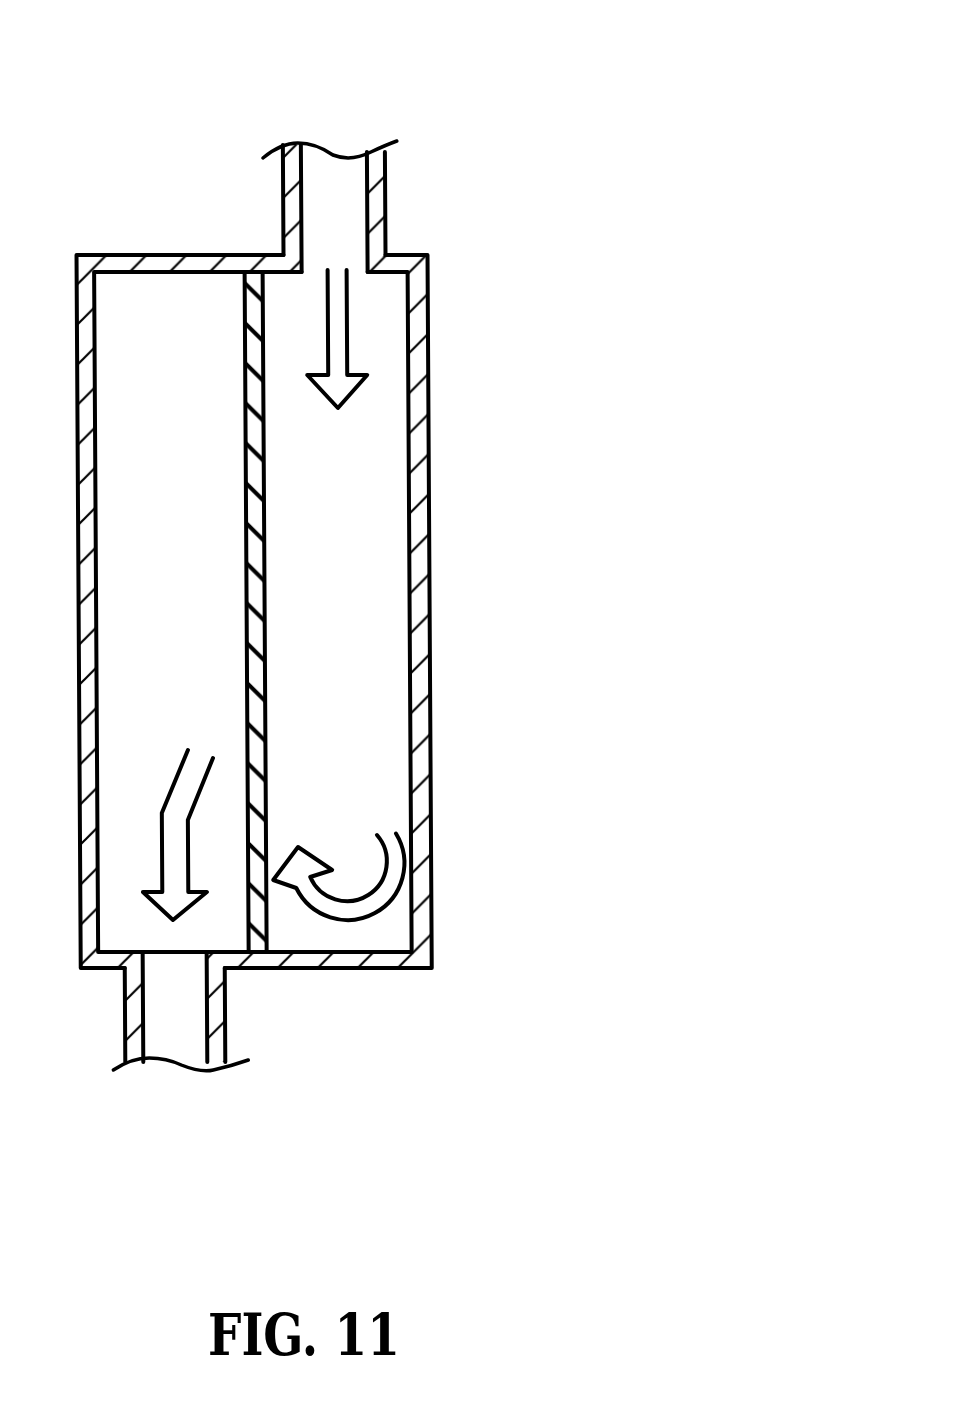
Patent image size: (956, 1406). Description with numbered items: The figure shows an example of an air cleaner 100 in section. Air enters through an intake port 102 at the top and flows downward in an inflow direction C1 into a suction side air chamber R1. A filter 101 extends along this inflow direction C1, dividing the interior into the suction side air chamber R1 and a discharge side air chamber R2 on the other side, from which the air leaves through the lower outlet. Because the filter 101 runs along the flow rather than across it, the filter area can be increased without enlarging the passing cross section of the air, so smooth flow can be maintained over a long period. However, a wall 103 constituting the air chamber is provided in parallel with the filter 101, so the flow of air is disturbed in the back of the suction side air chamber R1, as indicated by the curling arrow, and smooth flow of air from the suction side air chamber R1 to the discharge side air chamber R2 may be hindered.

The air cleaner 100 is at (598, 98).
The filter 101 is at (255, 477).
The intake port 102 is at (366, 258).
The wall 103 is at (424, 682).
The inflow direction C1 is at (345, 333).
The suction side air chamber R1 is at (360, 617).
The discharge side air chamber R2 is at (194, 618).